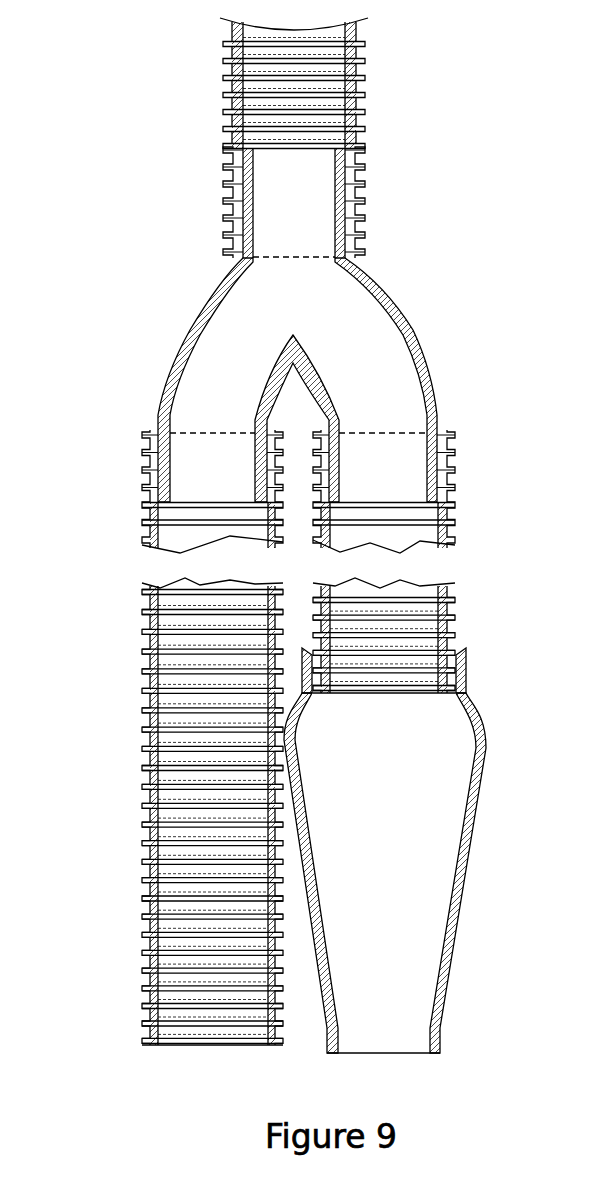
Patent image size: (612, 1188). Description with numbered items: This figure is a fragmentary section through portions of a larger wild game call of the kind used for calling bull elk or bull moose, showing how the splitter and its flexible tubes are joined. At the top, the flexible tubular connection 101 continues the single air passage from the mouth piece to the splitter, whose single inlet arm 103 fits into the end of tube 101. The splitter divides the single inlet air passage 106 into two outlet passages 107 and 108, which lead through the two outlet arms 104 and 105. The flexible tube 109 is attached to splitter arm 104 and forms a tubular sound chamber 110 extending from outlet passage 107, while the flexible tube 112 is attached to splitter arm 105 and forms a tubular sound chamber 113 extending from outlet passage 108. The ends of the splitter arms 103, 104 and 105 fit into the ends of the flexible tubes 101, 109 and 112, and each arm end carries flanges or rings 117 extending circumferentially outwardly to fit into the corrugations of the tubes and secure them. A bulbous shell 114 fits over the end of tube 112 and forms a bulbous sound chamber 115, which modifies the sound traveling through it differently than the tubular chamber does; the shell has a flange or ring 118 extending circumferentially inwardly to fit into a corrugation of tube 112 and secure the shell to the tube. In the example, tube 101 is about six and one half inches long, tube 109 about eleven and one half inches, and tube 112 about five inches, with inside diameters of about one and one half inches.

The flexible tubular connection 101 is at (366, 77).
The single inlet arm 103 is at (299, 209).
The outlet arm 104 is at (168, 393).
The outlet arm 105 is at (428, 396).
The single inlet air passage 106 is at (270, 200).
The outlet passage 107 is at (167, 380).
The outlet passage 108 is at (421, 380).
The flexible tube 109 is at (160, 811).
The tubular sound chamber 110 is at (150, 637).
The flexible tube 112 is at (450, 613).
The tubular sound chamber 113 is at (450, 524).
The bulbous shell 114 is at (421, 850).
The bulbous sound chamber 115 is at (415, 918).
The flanges or rings 117 is at (366, 165).
The flange or ring 118 is at (462, 660).